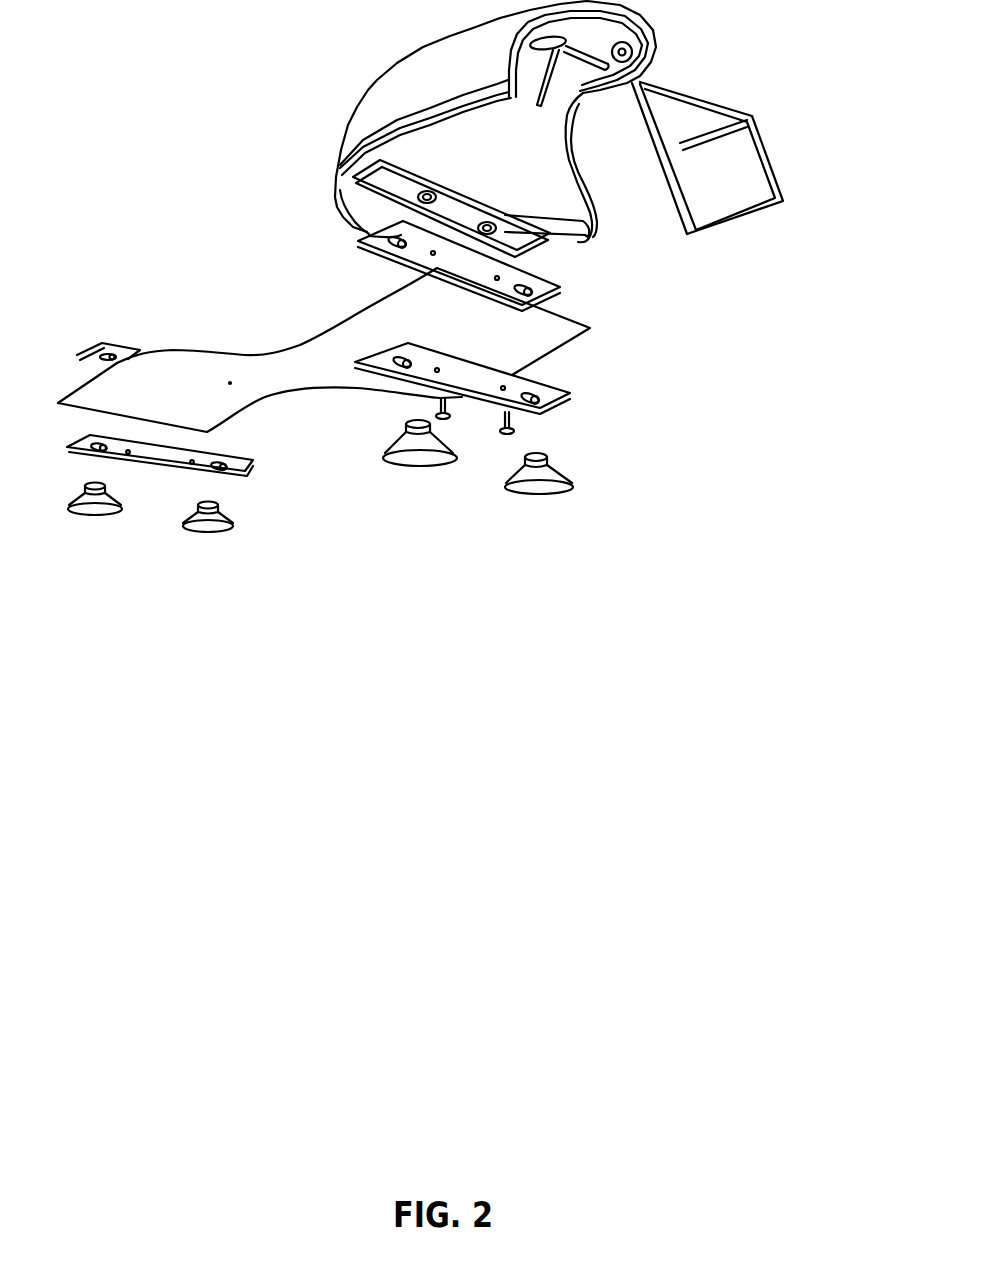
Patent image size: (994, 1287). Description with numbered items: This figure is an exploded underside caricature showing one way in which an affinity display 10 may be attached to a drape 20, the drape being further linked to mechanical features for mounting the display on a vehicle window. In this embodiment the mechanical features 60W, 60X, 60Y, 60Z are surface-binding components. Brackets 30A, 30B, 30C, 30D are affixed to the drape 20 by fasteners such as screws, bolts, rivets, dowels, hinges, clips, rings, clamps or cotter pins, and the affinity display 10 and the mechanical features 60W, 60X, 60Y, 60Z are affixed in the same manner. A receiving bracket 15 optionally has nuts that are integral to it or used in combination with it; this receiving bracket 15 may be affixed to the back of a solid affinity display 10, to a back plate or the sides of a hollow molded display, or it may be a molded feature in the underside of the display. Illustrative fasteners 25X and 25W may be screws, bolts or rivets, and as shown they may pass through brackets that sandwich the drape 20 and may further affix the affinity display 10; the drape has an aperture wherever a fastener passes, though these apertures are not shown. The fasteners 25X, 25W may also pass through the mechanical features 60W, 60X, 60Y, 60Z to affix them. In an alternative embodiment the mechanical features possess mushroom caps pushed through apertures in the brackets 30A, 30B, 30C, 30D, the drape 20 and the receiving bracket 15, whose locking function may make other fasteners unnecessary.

The affinity display 10 is at (427, 55).
The receiving bracket 15 is at (552, 245).
The drape 20 is at (278, 340).
The fastener 25W is at (519, 423).
The fastener 25X is at (462, 404).
The bracket 30A is at (560, 287).
The bracket 30B is at (567, 397).
The bracket 30C is at (90, 348).
The bracket 30D is at (250, 470).
The mechanical feature 60W is at (577, 468).
The mechanical feature 60X is at (407, 476).
The mechanical feature 60Y is at (212, 538).
The mechanical feature 60Z is at (100, 523).